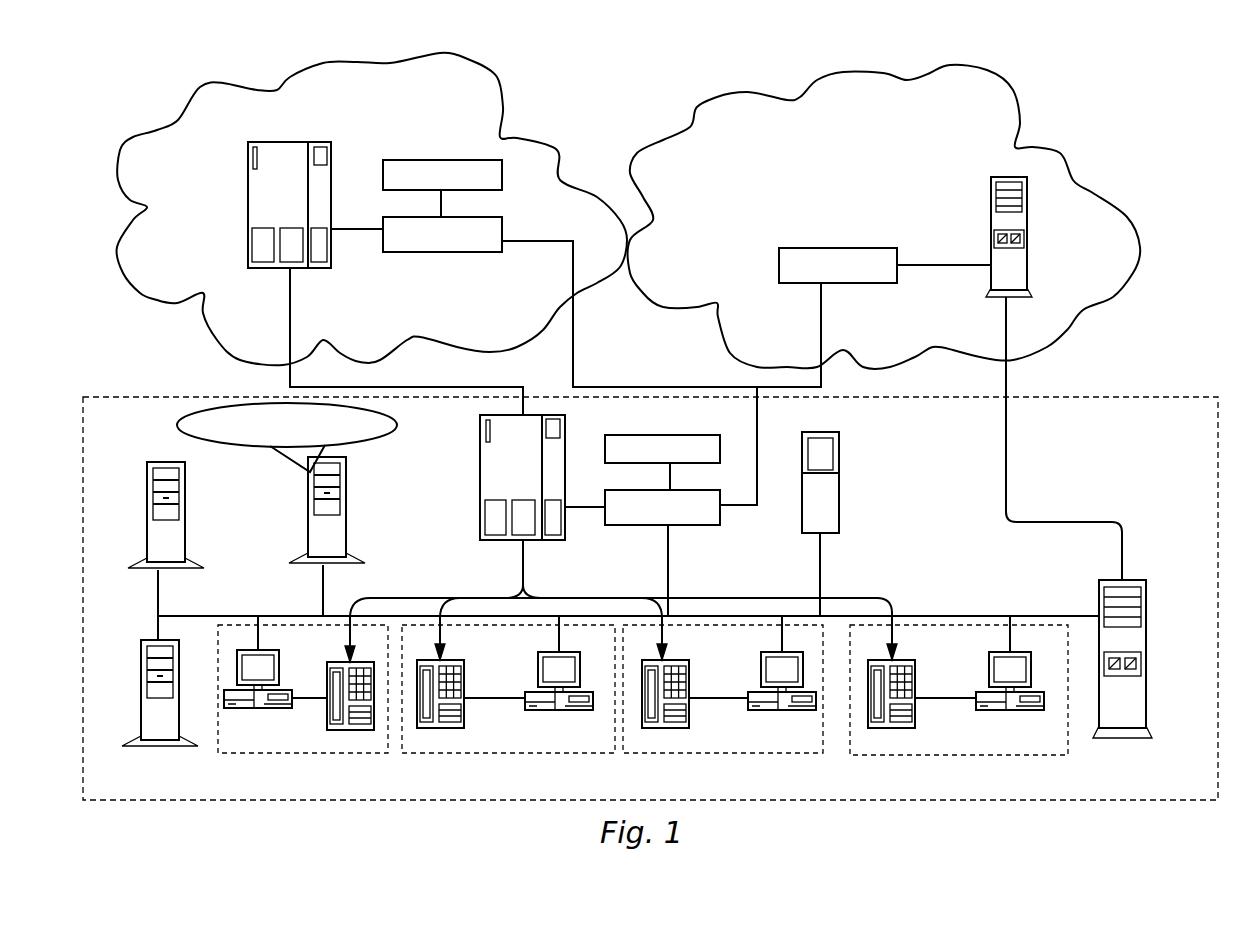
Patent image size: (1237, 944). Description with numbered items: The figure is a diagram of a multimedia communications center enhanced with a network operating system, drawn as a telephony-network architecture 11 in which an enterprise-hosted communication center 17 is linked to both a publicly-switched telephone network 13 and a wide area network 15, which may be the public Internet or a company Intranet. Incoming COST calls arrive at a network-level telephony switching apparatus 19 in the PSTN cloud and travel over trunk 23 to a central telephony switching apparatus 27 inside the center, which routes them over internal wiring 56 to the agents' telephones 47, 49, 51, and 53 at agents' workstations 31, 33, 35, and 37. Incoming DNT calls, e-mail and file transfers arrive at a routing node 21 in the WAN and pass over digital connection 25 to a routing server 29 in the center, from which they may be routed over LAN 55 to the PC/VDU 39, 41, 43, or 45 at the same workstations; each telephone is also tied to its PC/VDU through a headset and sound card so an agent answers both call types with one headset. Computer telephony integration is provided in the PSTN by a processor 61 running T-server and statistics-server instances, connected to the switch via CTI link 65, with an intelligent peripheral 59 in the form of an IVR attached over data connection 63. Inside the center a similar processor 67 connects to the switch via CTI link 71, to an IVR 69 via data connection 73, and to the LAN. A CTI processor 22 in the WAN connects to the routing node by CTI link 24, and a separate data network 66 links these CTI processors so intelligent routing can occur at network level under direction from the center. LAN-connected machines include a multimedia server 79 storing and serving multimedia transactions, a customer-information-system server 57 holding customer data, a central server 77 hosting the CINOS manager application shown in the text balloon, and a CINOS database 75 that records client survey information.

The telephony-network architecture 11 is at (540, 86).
The publicly-switched telephone network (PSTN) 13 is at (140, 135).
The wide area network (WAN) 15 is at (690, 127).
The communication center 17 is at (1112, 398).
The network-level telephony switching apparatus 19 is at (248, 218).
The routing node 21 is at (991, 245).
The CTI processor 22 is at (779, 265).
The trunk 23 is at (290, 330).
The CTI link 24 is at (937, 262).
The digital connection 25 is at (1006, 345).
The central telephony switching apparatus 27 is at (480, 497).
The routing server 29 is at (1146, 617).
The agent workstation 31 is at (318, 753).
The agent workstation 33 is at (515, 753).
The agent workstation 35 is at (735, 753).
The agent workstation 37 is at (965, 753).
The personal computer/video display unit (PC/VDU) 39 is at (283, 710).
The personal computer/video display unit (PC/VDU) 41 is at (540, 712).
The personal computer/video display unit (PC/VDU) 43 is at (760, 712).
The personal computer/video display unit (PC/VDU) 45 is at (988, 712).
The agent telephone 47 is at (327, 687).
The agent telephone 49 is at (465, 688).
The agent telephone 51 is at (688, 688).
The agent telephone 53 is at (917, 692).
The local area network (LAN) 55 is at (298, 616).
The internal wiring 56 is at (458, 598).
The customer-information-system server (CIS) 57 is at (141, 695).
The intelligent peripheral (IVR) 59 is at (408, 160).
The CTI processor (TS/Stat) 61 is at (445, 252).
The data connection 63 is at (441, 195).
The CTI link 65 is at (345, 229).
The data network 66 is at (615, 387).
The CTI processor (TS/Stat) 67 is at (663, 525).
The interactive voice response unit (IVR) 69 is at (662, 435).
The CTI link 71 is at (578, 508).
The data connection 73 is at (712, 476).
The CINOS database (DB) 75 is at (802, 490).
The central server (COS) 77 is at (308, 532).
The multimedia server (MIS) 79 is at (147, 527).